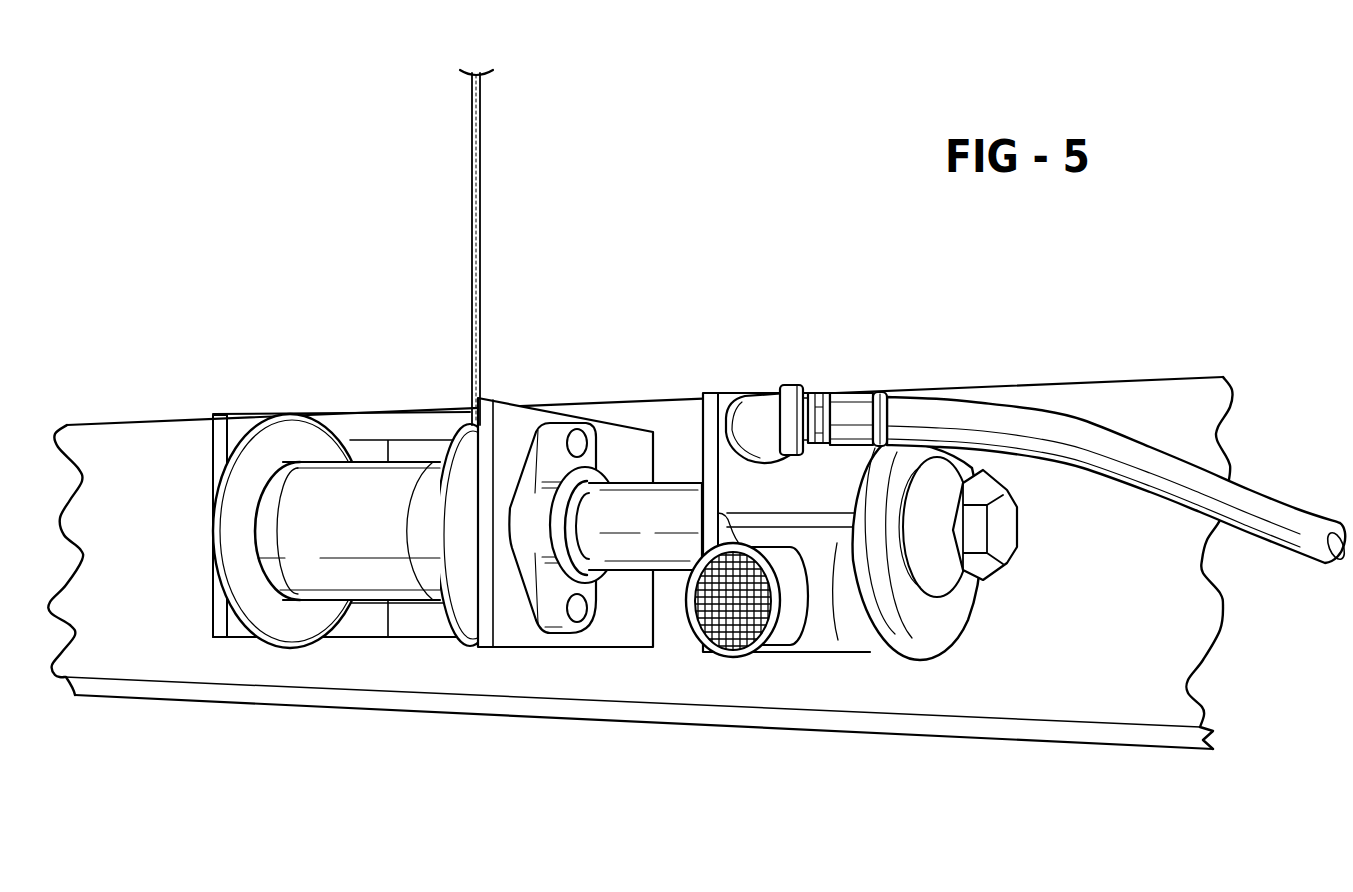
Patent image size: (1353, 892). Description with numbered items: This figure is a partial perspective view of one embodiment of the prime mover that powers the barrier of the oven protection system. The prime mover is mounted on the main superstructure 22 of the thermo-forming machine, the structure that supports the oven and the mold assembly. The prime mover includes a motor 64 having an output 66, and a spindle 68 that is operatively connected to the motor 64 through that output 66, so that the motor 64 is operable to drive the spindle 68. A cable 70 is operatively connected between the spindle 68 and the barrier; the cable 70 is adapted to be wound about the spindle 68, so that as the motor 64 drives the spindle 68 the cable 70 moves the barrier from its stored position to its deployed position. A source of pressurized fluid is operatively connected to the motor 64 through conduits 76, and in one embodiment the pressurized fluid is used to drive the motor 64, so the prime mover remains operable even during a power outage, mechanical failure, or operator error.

The main superstructure 22 is at (1087, 705).
The motor 64 is at (952, 612).
The output 66 is at (673, 497).
The spindle 68 is at (378, 491).
The cable 70 is at (481, 250).
The conduits 76 is at (1103, 433).